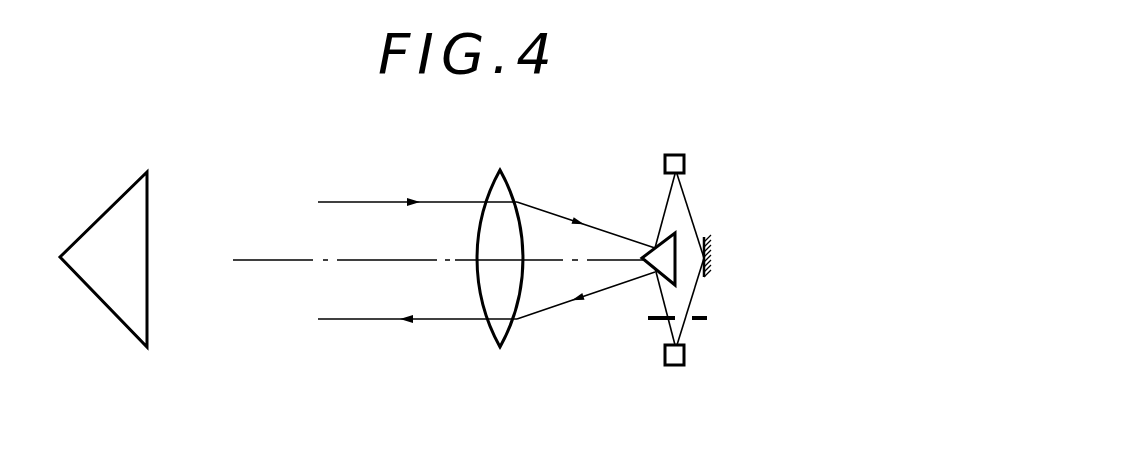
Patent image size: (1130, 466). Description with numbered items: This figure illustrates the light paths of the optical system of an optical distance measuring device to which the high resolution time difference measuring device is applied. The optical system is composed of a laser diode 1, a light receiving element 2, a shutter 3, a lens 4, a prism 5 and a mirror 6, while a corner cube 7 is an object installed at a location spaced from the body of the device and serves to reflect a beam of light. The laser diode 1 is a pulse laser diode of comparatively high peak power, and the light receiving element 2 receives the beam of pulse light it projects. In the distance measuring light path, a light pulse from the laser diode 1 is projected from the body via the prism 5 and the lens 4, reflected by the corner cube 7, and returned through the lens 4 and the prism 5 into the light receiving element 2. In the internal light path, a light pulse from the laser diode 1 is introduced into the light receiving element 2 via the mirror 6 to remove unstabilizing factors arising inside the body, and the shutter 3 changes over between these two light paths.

The laser diode 1 is at (677, 366).
The light receiving element 2 is at (685, 163).
The shutter 3 is at (651, 319).
The lens 4 is at (492, 187).
The prism 5 is at (655, 243).
The mirror 6 is at (713, 258).
The corner cube 7 is at (132, 187).